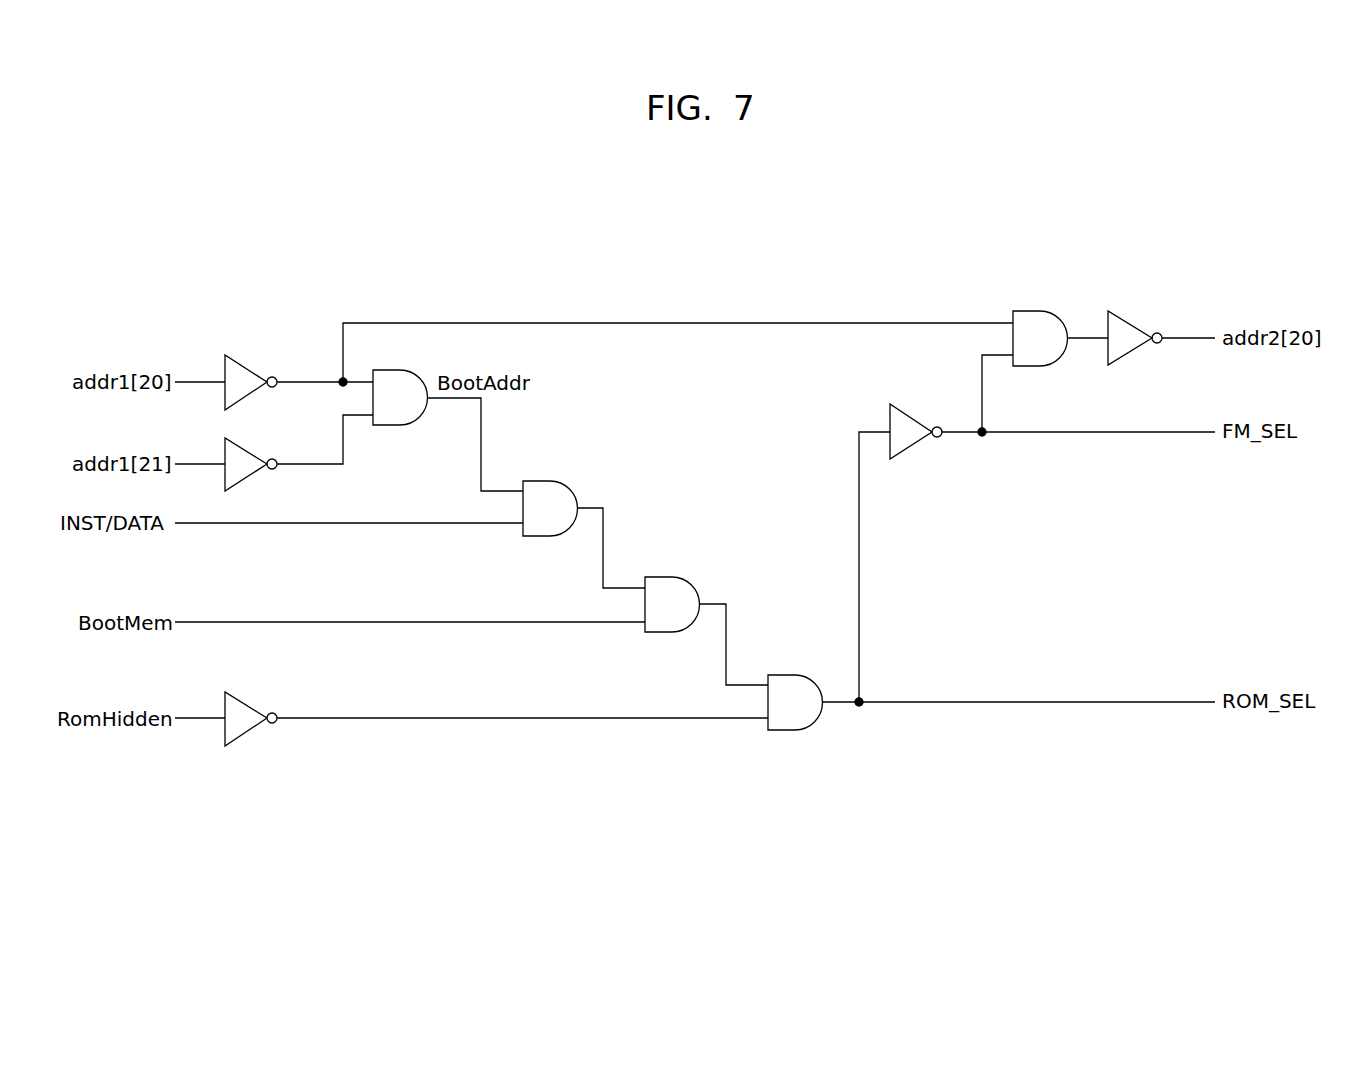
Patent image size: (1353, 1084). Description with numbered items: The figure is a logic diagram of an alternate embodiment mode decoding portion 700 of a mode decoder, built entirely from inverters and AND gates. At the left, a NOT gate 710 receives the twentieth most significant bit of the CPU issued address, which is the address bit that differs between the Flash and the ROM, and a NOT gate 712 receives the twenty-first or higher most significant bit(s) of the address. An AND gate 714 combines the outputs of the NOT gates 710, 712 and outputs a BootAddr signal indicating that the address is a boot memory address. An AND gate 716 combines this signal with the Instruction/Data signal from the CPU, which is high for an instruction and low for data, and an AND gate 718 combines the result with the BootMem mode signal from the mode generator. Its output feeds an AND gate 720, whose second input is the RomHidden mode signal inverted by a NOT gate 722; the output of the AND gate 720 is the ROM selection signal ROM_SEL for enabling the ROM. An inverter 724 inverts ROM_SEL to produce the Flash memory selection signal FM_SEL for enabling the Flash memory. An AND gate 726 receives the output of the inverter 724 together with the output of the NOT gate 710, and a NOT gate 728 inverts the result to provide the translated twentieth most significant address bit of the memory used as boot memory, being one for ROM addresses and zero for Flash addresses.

The mode decoding portion 700 is at (898, 277).
The NOT gate 710 is at (247, 369).
The NOT gate 712 is at (247, 451).
The AND gate 714 is at (400, 368).
The AND gate 716 is at (543, 480).
The AND gate 718 is at (665, 576).
The AND gate 720 is at (786, 673).
The NOT gate 722 is at (246, 704).
The inverter 724 is at (913, 416).
The AND gate 726 is at (1043, 311).
The NOT gate 728 is at (1130, 322).